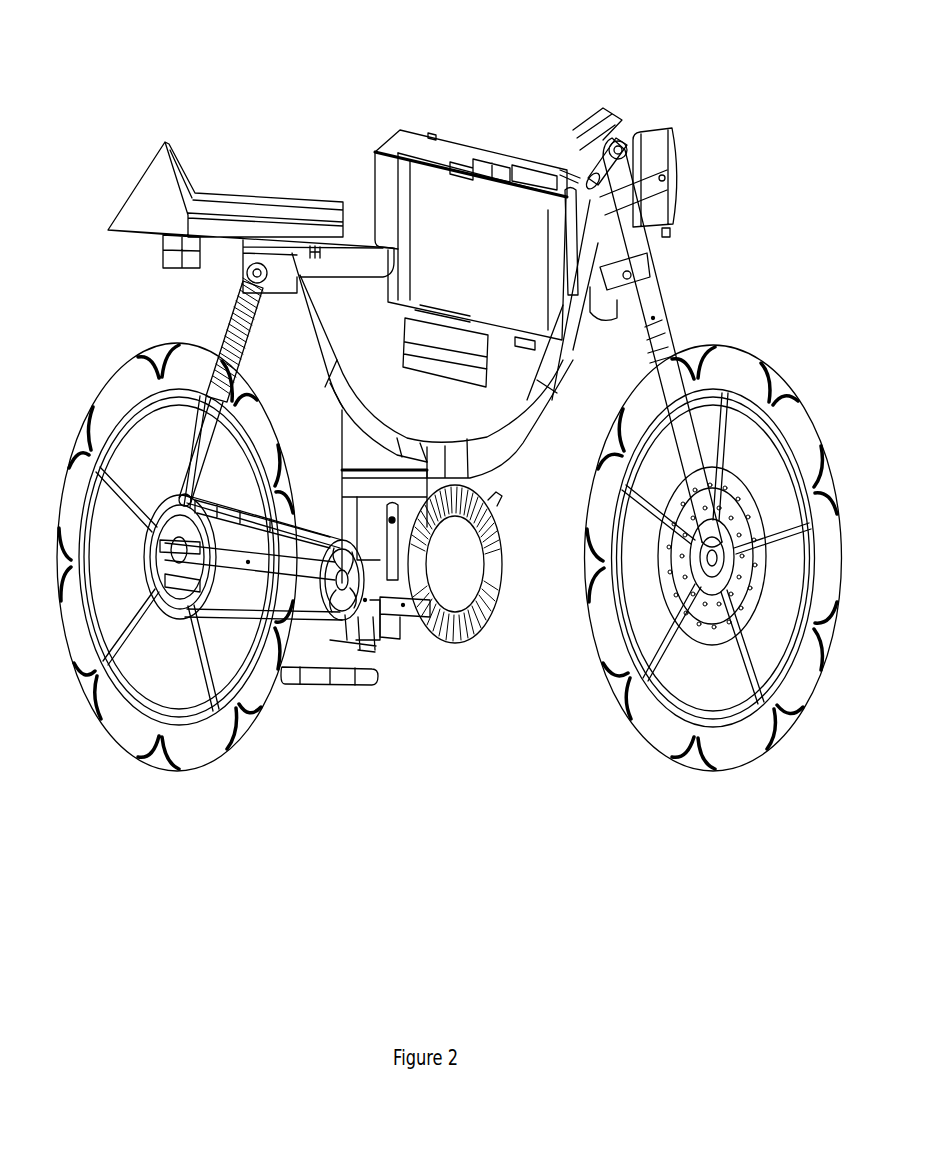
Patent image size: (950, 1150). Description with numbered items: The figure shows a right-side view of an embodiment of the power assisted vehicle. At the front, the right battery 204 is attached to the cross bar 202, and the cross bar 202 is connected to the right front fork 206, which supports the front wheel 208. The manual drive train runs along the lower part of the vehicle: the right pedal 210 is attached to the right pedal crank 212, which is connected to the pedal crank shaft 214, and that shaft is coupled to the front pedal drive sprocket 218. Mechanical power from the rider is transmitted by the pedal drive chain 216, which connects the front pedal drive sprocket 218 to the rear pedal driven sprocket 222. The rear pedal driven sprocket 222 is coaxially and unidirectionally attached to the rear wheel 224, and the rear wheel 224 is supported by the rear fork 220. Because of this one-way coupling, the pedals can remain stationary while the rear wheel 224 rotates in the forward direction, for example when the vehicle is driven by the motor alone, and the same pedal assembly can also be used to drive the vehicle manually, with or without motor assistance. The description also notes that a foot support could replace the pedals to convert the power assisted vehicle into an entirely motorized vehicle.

The cross bar 202 is at (355, 262).
The right battery 204 is at (458, 243).
The right front fork 206 is at (653, 318).
The front wheel 208 is at (668, 735).
The right pedal 210 is at (403, 605).
The right pedal crank 212 is at (365, 600).
The pedal crank shaft 214 is at (344, 618).
The pedal drive chain 216 is at (297, 588).
The front pedal drive sprocket 218 is at (322, 585).
The rear fork 220 is at (248, 562).
The rear pedal driven sprocket 222 is at (183, 585).
The rear wheel 224 is at (108, 717).